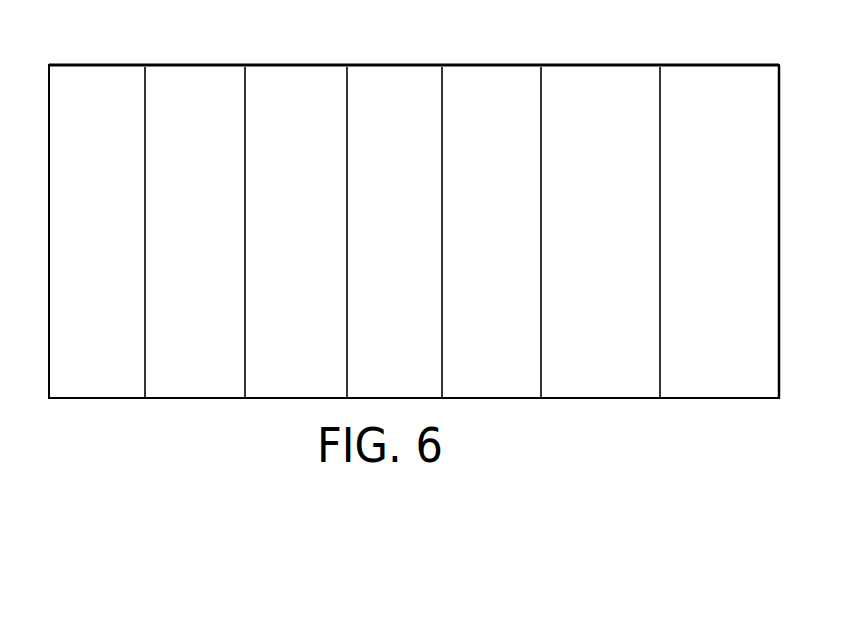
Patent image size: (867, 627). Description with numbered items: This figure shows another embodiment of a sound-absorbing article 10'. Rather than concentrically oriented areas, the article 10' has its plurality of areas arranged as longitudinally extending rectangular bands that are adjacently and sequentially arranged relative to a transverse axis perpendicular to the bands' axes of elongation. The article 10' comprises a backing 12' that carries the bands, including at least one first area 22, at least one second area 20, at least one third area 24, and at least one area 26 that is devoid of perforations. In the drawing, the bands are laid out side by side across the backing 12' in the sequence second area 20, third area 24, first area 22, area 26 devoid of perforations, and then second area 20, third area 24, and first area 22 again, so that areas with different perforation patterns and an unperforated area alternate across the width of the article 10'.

The article 10' is at (407, 205).
The backing 12' is at (414, 205).
The second area 20 is at (113, 312).
The first area 22 is at (299, 312).
The third area 24 is at (209, 312).
The area devoid of perforations 26 is at (414, 329).